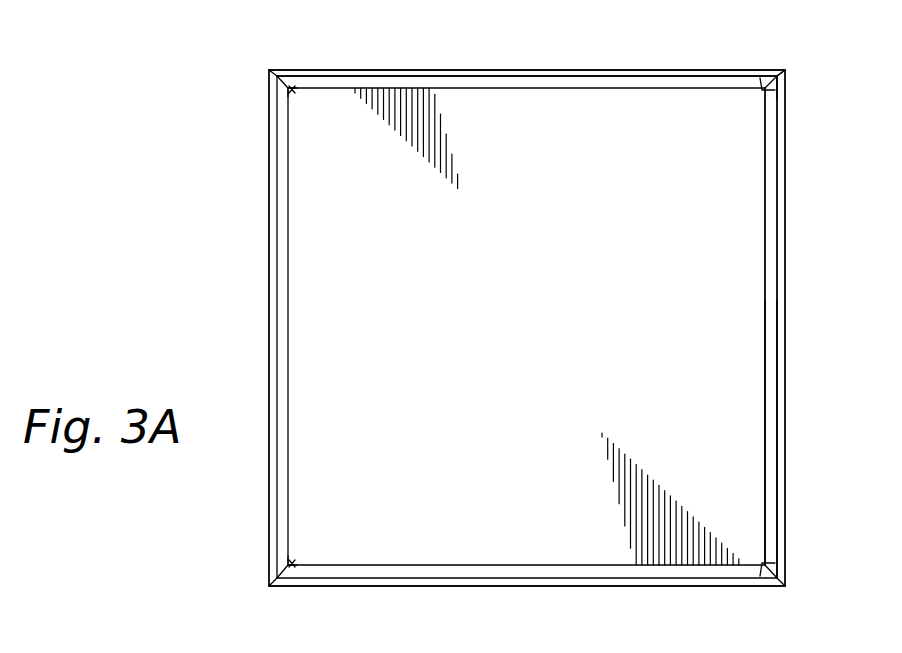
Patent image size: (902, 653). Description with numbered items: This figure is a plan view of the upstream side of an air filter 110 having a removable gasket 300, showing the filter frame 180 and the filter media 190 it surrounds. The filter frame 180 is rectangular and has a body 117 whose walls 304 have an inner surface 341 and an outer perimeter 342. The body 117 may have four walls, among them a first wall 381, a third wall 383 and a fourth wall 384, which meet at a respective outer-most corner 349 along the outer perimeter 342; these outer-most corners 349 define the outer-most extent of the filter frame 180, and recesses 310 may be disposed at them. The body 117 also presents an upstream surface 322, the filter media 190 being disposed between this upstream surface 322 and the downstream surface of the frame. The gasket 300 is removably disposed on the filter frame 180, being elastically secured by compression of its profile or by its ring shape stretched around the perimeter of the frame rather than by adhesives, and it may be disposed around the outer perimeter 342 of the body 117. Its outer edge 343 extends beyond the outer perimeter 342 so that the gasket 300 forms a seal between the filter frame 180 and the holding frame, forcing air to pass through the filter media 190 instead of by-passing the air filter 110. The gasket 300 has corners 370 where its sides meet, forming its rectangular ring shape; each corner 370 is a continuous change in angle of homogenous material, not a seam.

The air filter 110 is at (203, 39).
The filter frame 180 is at (322, 76).
The first wall 381 is at (485, 76).
The gasket 300 is at (638, 70).
The corners 370 is at (775, 70).
The walls 304 is at (604, 89).
The recesses 310 is at (293, 91).
The fourth wall 384 is at (269, 221).
The outer edge 343 is at (785, 192).
The inner surface 341 is at (765, 233).
The outer perimeter 342 is at (778, 286).
The filter media 190 is at (378, 342).
The body 117 is at (765, 337).
The upstream surface 322 is at (772, 392).
The outer-most corner 349 is at (293, 562).
The third wall 383 is at (483, 578).